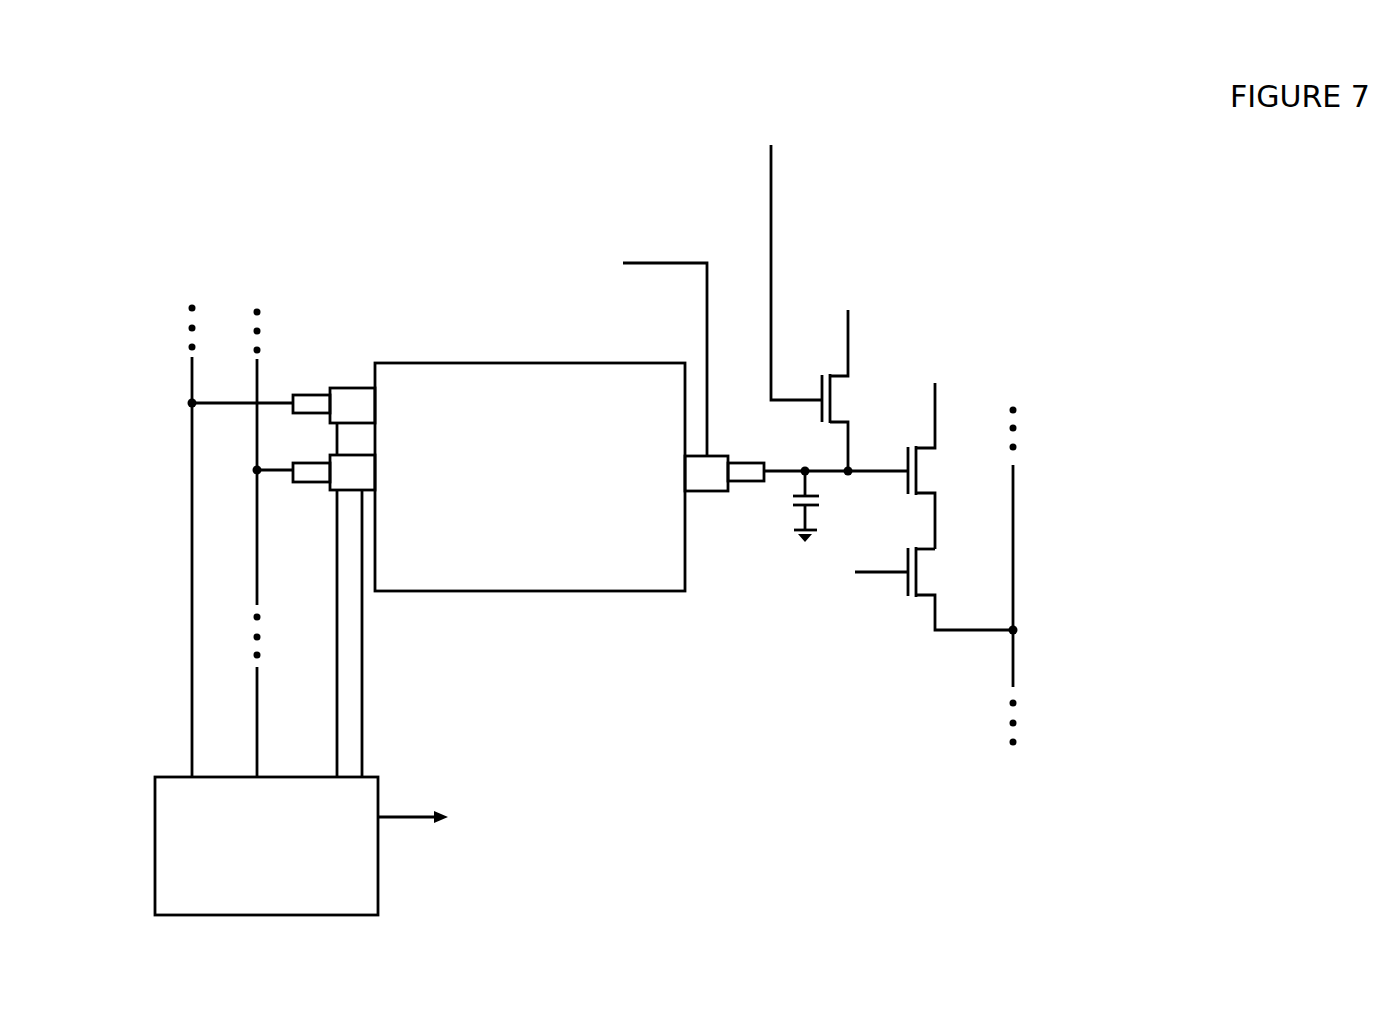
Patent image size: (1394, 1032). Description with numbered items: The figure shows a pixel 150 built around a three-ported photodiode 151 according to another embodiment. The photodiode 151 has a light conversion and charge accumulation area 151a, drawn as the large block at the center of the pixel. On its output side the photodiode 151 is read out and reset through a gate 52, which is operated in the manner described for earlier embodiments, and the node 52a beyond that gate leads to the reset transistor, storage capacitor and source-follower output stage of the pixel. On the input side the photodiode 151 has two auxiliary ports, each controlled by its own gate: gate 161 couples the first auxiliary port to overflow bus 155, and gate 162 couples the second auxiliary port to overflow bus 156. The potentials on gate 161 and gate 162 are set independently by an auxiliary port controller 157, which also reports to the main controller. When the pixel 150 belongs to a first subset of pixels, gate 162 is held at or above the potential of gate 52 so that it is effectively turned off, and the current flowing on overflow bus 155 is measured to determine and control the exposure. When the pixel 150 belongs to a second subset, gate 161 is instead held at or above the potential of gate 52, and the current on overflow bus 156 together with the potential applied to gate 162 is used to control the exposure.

The pixel 150 is at (152, 76).
The three-ported photodiode 151 is at (530, 508).
The light conversion and charge accumulation area 151a is at (549, 493).
The gate 52 is at (713, 480).
The transfer gate output node 52a is at (748, 470).
The overflow bus 155 is at (190, 553).
The overflow bus 156 is at (285, 562).
The auxiliary port controller 157 is at (155, 835).
The gate 161 is at (349, 397).
The gate 162 is at (356, 478).